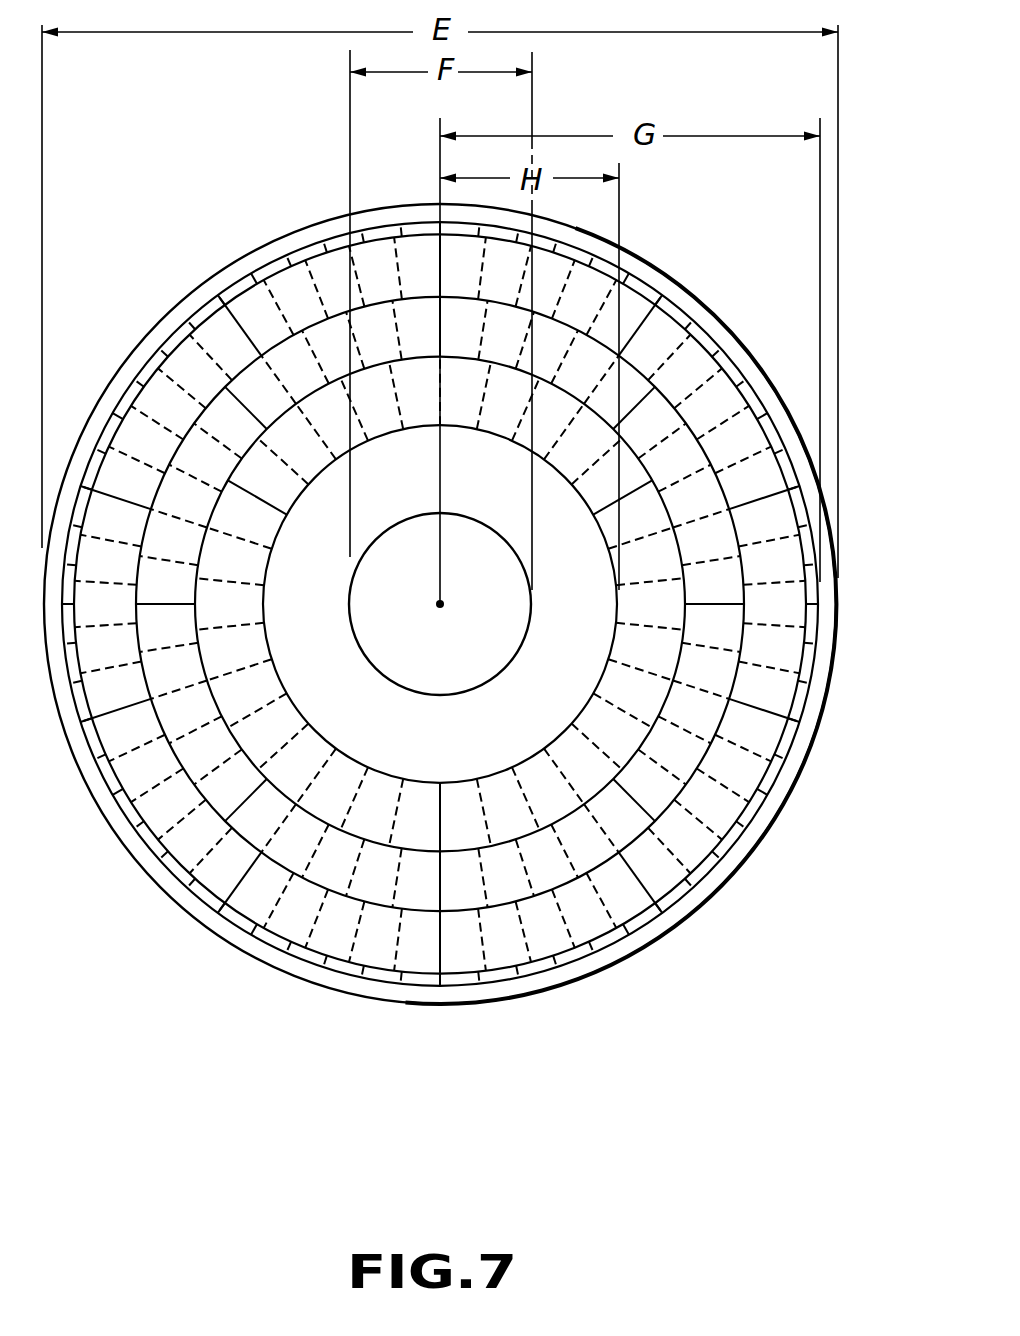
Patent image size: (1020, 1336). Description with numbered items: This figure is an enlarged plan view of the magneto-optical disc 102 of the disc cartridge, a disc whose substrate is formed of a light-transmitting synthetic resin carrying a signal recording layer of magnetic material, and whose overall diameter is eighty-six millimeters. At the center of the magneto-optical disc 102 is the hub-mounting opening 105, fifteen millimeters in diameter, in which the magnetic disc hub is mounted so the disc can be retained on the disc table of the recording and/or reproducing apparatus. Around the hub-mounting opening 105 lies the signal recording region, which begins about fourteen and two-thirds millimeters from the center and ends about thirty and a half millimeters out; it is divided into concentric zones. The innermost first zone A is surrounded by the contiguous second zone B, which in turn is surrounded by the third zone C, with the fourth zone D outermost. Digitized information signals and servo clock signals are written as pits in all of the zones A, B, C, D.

The magneto-optical disc 102 is at (722, 318).
The hub-mounting opening 105 is at (370, 662).
The first zone A is at (463, 818).
The second zone B is at (460, 883).
The third zone C is at (465, 935).
The fourth zone D is at (468, 980).